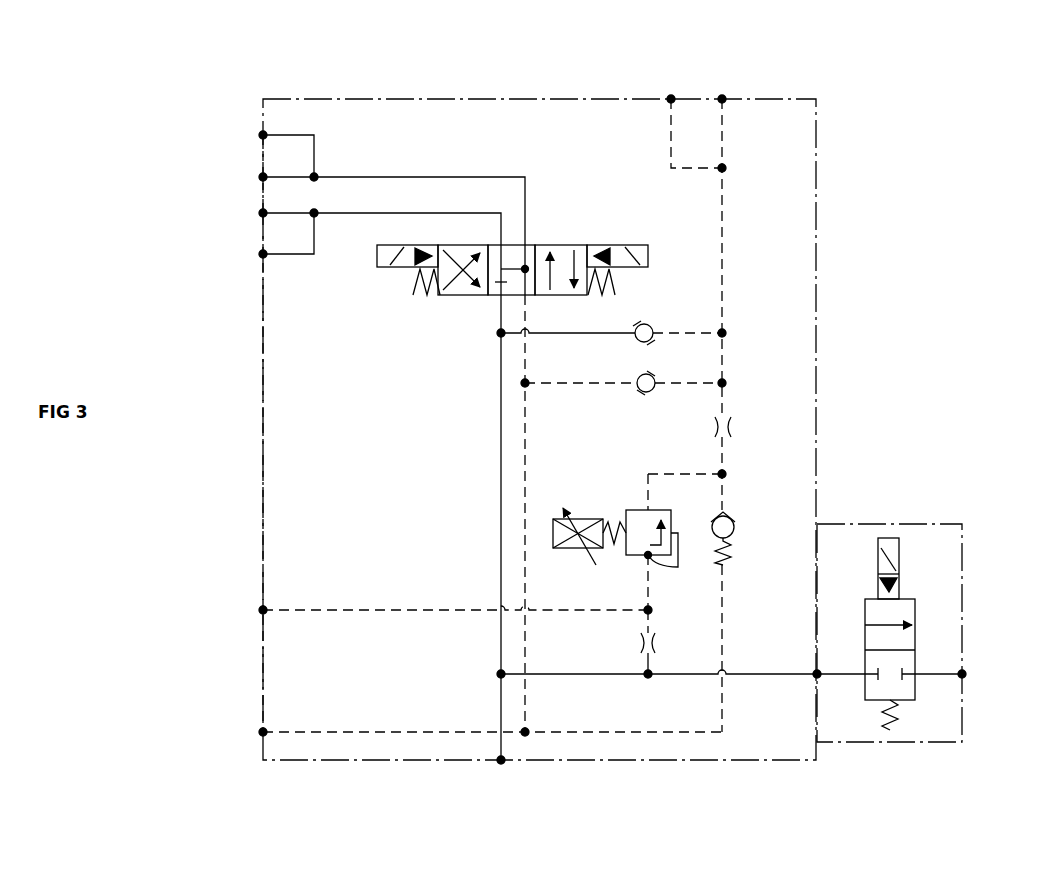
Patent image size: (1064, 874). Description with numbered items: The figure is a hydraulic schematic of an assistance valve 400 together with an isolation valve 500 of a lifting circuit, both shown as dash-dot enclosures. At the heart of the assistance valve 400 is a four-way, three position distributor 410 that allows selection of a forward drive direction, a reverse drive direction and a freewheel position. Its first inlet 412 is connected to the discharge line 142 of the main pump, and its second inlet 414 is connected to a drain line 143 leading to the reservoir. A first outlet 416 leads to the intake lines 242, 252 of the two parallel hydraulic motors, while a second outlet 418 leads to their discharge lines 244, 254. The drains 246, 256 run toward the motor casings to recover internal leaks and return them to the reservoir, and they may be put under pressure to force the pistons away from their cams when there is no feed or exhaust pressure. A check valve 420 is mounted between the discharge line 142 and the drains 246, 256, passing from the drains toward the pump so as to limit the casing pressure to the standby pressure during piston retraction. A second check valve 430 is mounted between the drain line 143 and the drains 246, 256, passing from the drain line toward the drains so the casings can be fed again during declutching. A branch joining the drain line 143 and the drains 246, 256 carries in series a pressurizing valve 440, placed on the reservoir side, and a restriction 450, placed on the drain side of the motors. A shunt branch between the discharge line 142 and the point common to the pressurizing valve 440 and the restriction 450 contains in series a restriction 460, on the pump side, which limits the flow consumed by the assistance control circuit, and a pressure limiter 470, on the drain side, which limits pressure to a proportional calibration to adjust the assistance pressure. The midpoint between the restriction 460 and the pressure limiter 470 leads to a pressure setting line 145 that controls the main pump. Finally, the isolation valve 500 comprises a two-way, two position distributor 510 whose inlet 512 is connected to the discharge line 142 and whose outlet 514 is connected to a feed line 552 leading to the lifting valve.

The assistance valve 400 is at (817, 352).
The isolation valve 500 is at (962, 560).
The intake line 242 is at (263, 135).
The intake line 252 is at (263, 177).
The discharge line 244 is at (263, 213).
The discharge line 254 is at (263, 254).
The drain 246 is at (671, 99).
The drain 256 is at (722, 99).
The first outlet 416 is at (412, 175).
The second outlet 418 is at (412, 212).
The four-way, three position distributor 410 is at (559, 233).
The first inlet 412 is at (500, 314).
The second inlet 414 is at (527, 313).
The check valve 420 is at (650, 321).
The second check valve 430 is at (638, 394).
The restriction 450 is at (737, 424).
The pressurizing valve 440 is at (736, 512).
The pressure limiter 470 is at (614, 504).
The restriction 460 is at (660, 643).
The pressure setting line 145 is at (380, 610).
The drain line 143 is at (262, 732).
The discharge line 142 is at (502, 772).
The two-way, two position distributor 510 is at (855, 639).
The inlet 512 is at (843, 677).
The outlet 514 is at (930, 672).
The feed line 552 is at (963, 674).